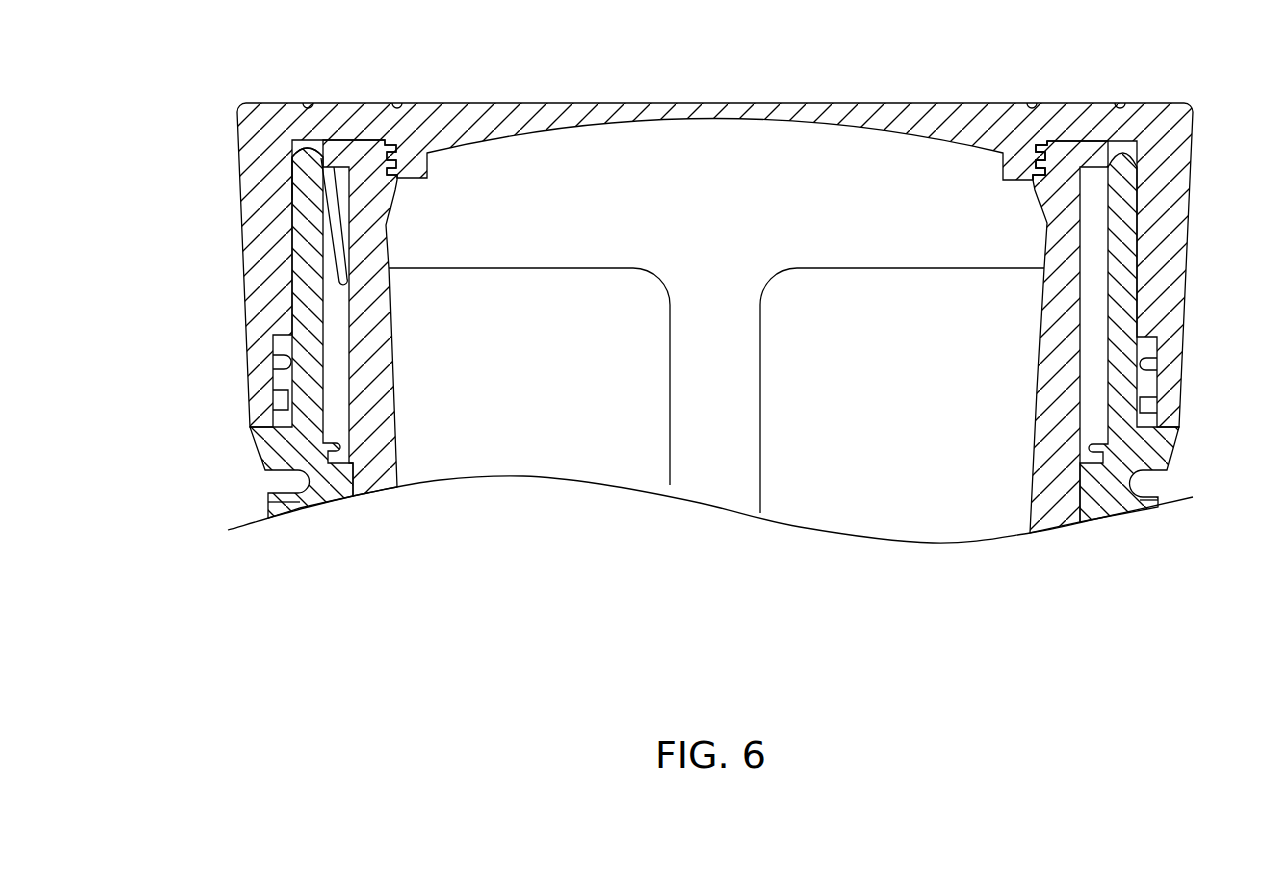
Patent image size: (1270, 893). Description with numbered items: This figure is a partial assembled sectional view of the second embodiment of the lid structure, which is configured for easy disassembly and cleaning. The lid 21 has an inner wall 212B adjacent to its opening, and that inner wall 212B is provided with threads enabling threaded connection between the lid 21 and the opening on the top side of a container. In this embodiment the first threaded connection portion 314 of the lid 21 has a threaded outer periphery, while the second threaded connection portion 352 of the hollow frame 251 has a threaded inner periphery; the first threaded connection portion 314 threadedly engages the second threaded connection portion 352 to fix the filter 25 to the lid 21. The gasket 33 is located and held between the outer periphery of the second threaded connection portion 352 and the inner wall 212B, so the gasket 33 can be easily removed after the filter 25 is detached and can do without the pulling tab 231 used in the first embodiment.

The lid 21 is at (1180, 150).
The inner wall 212B is at (287, 243).
The pulling tab 231 is at (293, 187).
The gasket 33 is at (328, 150).
The first threaded connection portion 314 is at (1018, 158).
The second threaded connection portion 352 is at (1063, 163).
The hollow frame 251 is at (1057, 307).
The filter 25 is at (957, 571).